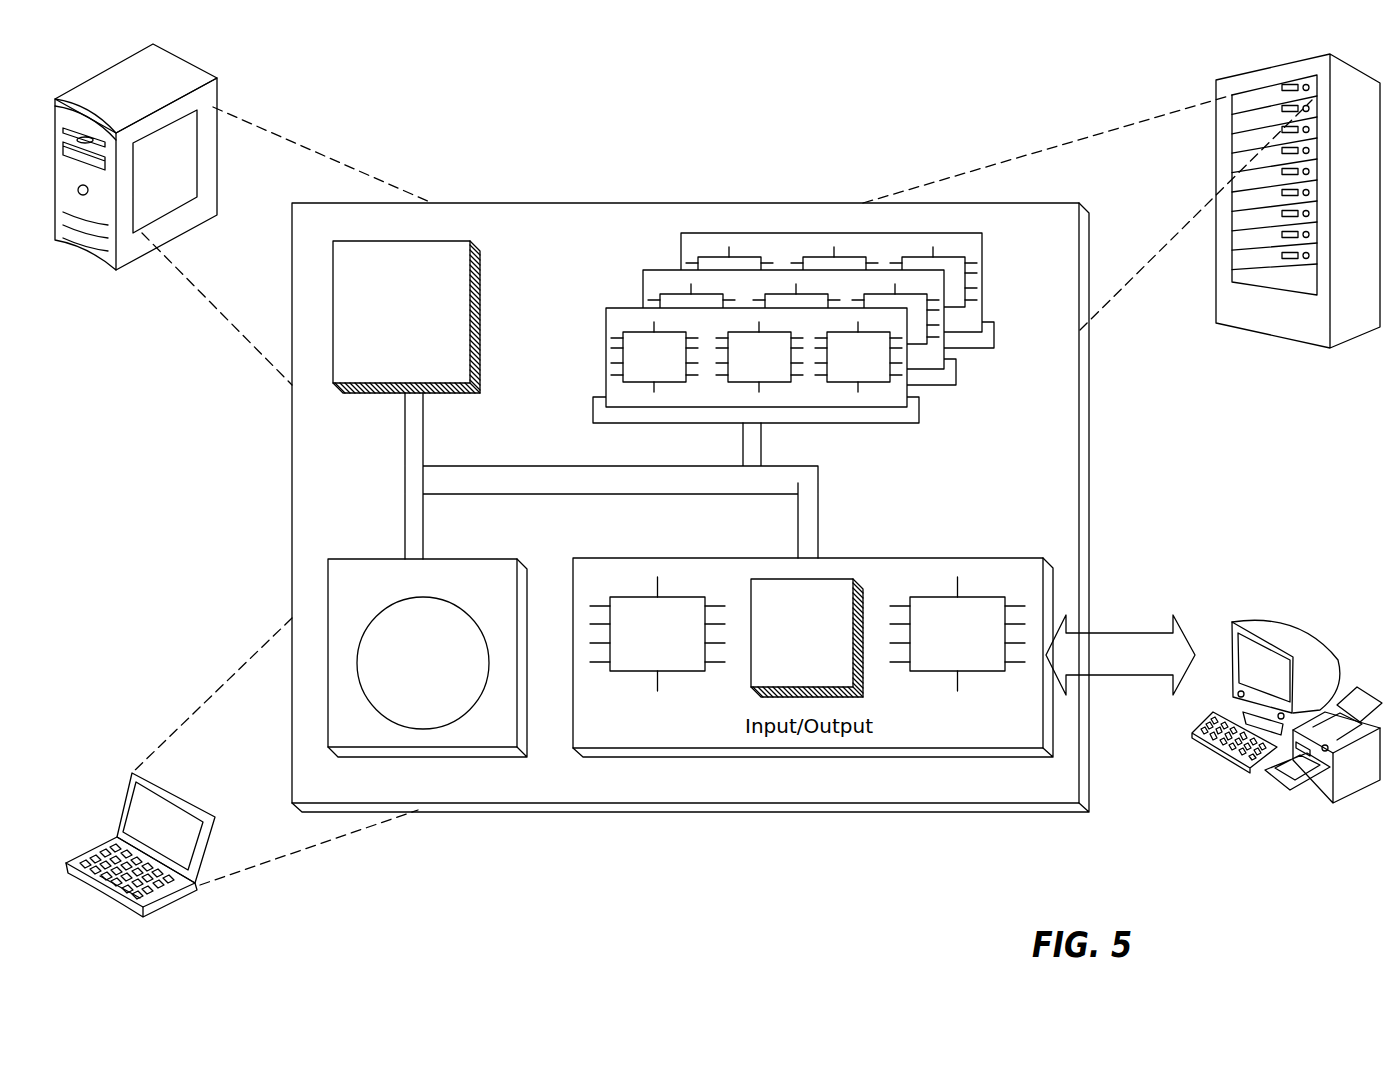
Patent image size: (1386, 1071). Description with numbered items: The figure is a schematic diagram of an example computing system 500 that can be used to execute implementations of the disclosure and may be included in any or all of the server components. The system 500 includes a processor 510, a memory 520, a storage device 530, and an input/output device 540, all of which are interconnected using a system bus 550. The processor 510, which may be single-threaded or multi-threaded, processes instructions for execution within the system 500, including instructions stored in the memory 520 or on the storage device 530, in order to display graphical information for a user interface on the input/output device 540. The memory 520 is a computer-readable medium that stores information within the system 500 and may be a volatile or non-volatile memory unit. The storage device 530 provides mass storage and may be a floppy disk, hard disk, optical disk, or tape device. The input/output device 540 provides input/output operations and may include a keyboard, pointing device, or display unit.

The computing system 500 is at (500, 118).
The processor 510 is at (406, 317).
The memory 520 is at (986, 383).
The storage device 530 is at (427, 658).
The input/output device 540 is at (1230, 624).
The system bus 550 is at (605, 483).